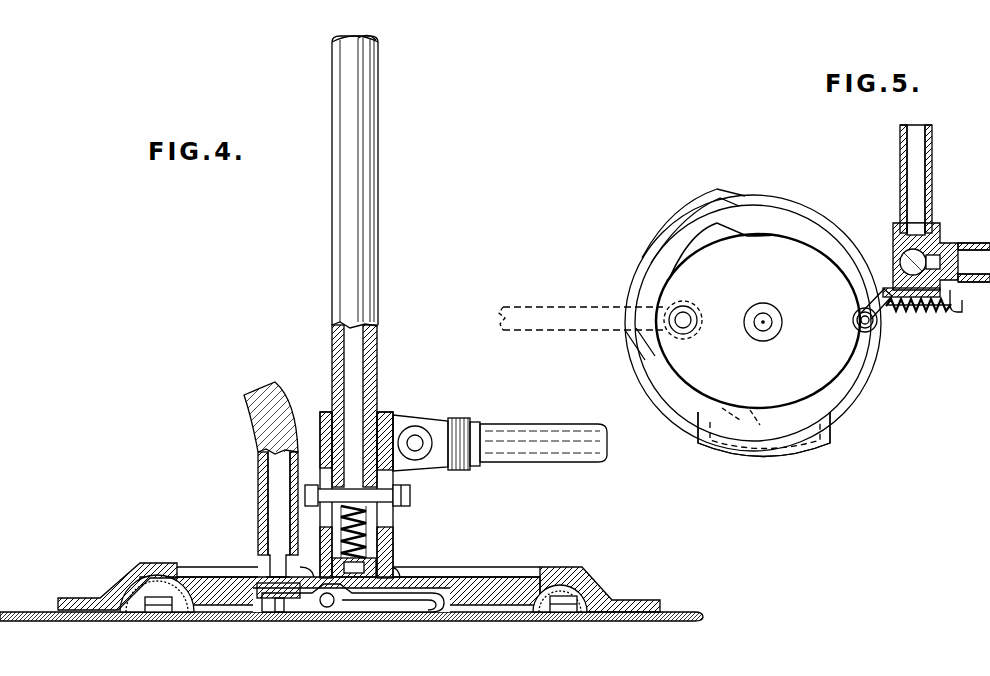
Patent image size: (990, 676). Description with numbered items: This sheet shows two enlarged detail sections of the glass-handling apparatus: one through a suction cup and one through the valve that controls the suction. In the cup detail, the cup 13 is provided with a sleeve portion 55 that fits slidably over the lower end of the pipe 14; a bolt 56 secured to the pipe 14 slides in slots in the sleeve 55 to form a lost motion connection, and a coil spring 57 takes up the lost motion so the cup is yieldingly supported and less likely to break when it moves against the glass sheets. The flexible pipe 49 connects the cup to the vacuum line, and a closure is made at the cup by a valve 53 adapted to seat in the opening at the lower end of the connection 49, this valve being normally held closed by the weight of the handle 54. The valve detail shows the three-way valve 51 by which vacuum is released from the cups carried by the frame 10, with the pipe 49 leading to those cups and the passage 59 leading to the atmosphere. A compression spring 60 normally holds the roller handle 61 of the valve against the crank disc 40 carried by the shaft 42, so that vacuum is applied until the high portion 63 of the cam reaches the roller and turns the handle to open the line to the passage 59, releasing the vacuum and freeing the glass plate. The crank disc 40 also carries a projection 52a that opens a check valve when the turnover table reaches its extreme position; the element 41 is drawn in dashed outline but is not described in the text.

In FIG. 4, the frame 10 is at (218, 548).
In FIG. 4, the cup 13 is at (125, 598).
In FIG. 4, the pipe 14 is at (380, 285).
In FIG. 5, the crank disc 40 is at (815, 378).
In FIG. 5, the arm 41 is at (546, 322).
In FIG. 5, the shaft 42 is at (758, 318).
In FIG. 4, the flexible pipe 49 is at (258, 483).
In FIG. 5, the flexible pipe 49 is at (900, 165).
In FIG. 5, the valve 51 is at (938, 237).
In FIG. 5, the projection 52a is at (775, 437).
In FIG. 4, the valve 53 is at (280, 602).
In FIG. 4, the handle 54 is at (377, 606).
In FIG. 4, the sleeve portion 55 is at (393, 547).
In FIG. 4, the bolt 56 is at (355, 498).
In FIG. 4, the coil spring 57 is at (368, 517).
In FIG. 5, the passage 59 is at (920, 312).
In FIG. 5, the compression spring 60 is at (902, 312).
In FIG. 5, the roller handle 61 is at (860, 308).
In FIG. 5, the high portion 63 is at (630, 317).